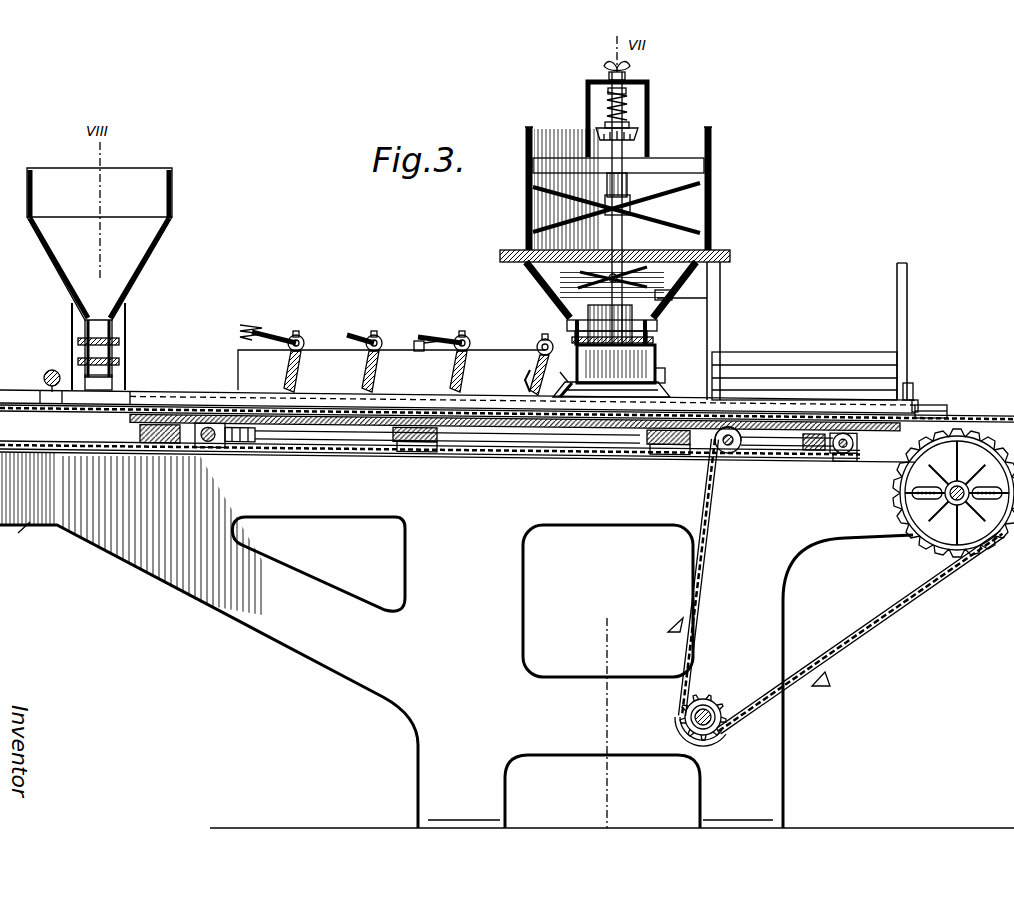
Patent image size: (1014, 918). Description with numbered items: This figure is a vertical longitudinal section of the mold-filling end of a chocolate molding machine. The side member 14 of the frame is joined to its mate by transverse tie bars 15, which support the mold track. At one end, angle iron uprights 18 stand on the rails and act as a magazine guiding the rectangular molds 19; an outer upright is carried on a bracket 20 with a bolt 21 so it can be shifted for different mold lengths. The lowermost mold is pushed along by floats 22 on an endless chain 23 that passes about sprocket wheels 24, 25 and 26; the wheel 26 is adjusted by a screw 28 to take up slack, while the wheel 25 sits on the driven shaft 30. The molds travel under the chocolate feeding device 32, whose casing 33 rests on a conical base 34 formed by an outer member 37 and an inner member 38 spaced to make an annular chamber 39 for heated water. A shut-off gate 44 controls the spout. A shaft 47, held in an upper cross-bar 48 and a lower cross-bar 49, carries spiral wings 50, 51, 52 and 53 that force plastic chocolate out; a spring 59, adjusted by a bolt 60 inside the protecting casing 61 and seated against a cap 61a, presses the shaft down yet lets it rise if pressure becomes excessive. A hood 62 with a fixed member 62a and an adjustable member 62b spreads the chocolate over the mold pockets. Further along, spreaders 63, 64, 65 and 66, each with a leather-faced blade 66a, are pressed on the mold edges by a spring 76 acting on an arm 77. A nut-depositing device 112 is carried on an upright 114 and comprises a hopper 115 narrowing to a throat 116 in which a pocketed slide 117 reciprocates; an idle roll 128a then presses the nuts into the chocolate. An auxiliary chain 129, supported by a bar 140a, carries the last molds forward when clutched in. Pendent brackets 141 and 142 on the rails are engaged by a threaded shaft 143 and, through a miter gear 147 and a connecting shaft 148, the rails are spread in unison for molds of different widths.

The side member 14 is at (298, 645).
The transverse tie bar 15 is at (184, 412).
The angle iron upright 18 is at (720, 312).
The mold 19 is at (784, 357).
The foot or bracket 20 is at (914, 390).
The bolt 21 is at (918, 406).
The float or engaging member 22 is at (948, 409).
The endless chain or carrier 23 is at (704, 549).
The sprocket wheel 24 is at (740, 452).
The sprocket wheel 25 is at (713, 700).
The sprocket wheel 26 is at (921, 547).
The screw 28 is at (985, 560).
The shaft 30 is at (693, 724).
The chocolate holding or feeding device 32 is at (706, 192).
The cylindrical tank-like member or casing 33 is at (710, 160).
The base 34 is at (670, 298).
The outer member 37 is at (545, 281).
The inner member 38 is at (560, 270).
The annular chamber 39 is at (662, 307).
The shut-off slide or gate 44 is at (656, 366).
The shaft 47 is at (620, 183).
The cross-bar 48 is at (650, 160).
The cross-bar 49 is at (610, 325).
The wing 50 is at (685, 198).
The wing 51 is at (690, 226).
The wing 52 is at (620, 272).
The wing 53 is at (673, 294).
The spring 59 is at (607, 102).
The screw or bolt 60 is at (588, 84).
The inclosing and protecting casing 61 is at (638, 82).
The cap 61a is at (645, 93).
The hood 62 is at (563, 377).
The fixed member 62a is at (674, 377).
The adjustable member 62b is at (611, 391).
The spreader or distributer 63 is at (272, 352).
The spreader or distributer 64 is at (363, 356).
The spreader or distributer 65 is at (444, 353).
The spreader or distributer 66 is at (537, 346).
The blade 66a is at (528, 370).
The spring 76 is at (413, 343).
The rod or arm 77 is at (419, 343).
The nut depositing device 112 is at (170, 210).
The standard or upright 114 is at (117, 377).
The hopper or receptacle 115 is at (154, 258).
The throat 116 is at (110, 333).
The slide 117 is at (77, 341).
The idle roll 128a is at (37, 374).
The auxiliary sprocket chain 129 is at (598, 459).
The bar 140a is at (241, 420).
The pendent bracket 141 is at (855, 440).
The pendent bracket 142 is at (136, 438).
The threaded shaft 143 is at (212, 449).
The miter gear 147 is at (812, 452).
The shaft 148 is at (787, 448).